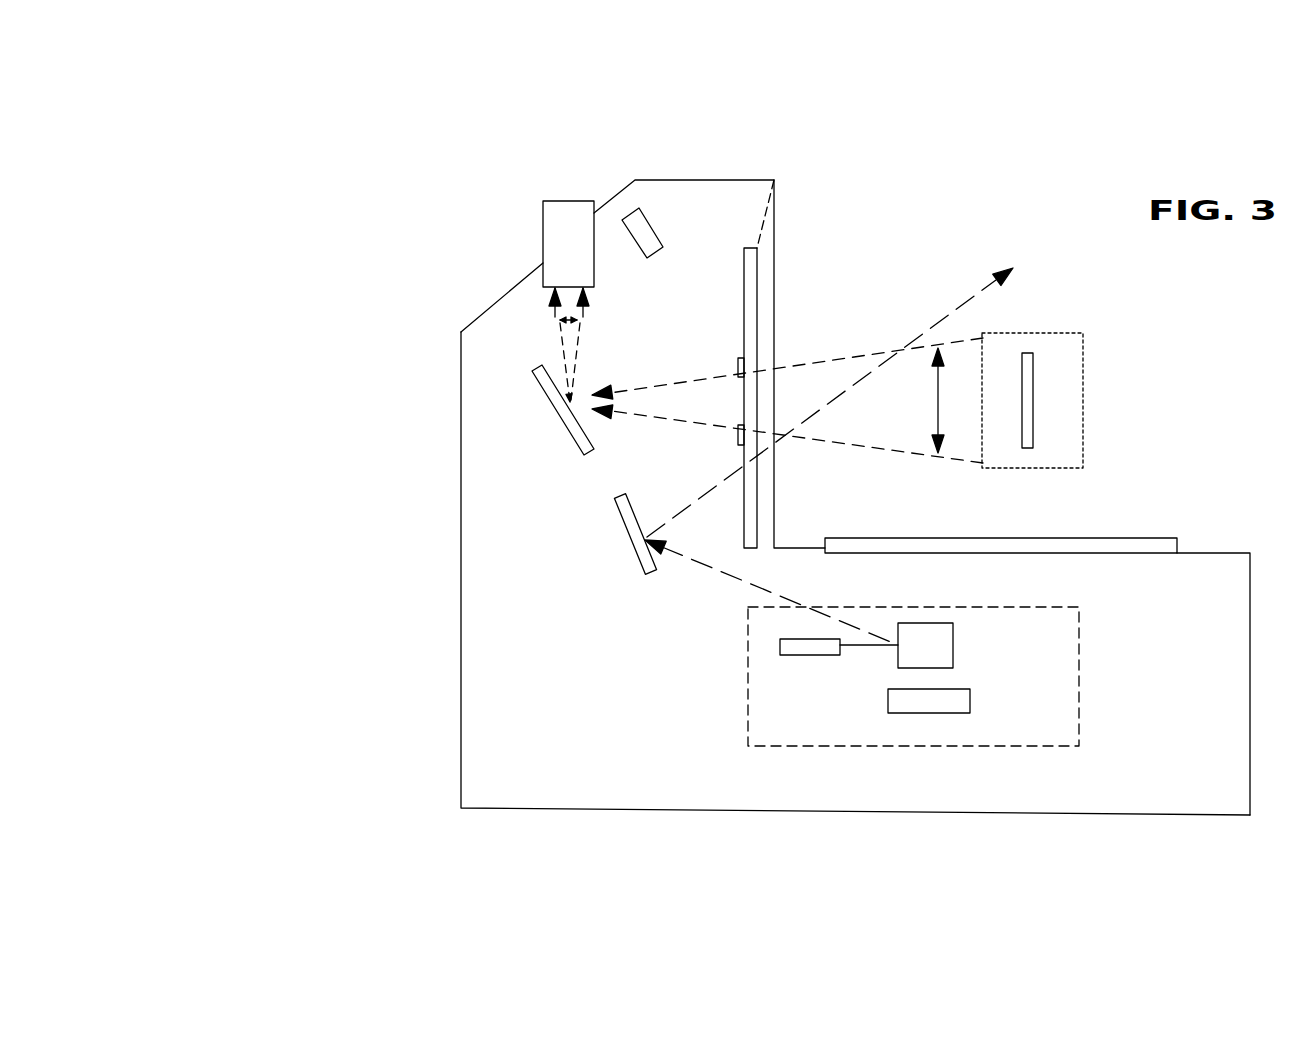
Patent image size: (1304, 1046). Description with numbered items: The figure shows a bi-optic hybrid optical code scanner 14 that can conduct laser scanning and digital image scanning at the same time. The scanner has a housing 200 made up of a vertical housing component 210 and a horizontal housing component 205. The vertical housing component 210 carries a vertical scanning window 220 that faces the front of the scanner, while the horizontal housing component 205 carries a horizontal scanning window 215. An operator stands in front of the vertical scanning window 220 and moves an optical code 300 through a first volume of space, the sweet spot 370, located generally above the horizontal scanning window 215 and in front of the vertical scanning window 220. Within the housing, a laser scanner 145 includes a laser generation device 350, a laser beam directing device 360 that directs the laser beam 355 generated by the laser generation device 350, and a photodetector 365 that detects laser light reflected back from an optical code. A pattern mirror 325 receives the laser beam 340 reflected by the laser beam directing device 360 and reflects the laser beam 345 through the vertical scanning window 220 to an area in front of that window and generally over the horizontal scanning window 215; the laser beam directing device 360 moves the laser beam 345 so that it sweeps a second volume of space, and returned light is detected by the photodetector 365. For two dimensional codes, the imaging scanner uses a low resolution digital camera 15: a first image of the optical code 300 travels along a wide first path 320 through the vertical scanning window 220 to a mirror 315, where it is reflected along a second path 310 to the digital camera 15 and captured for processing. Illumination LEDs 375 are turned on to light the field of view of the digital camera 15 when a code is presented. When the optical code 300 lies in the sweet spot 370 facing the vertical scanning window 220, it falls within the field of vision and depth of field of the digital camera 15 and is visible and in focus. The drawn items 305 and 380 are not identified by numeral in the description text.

The hybrid optical code scanner 14 is at (383, 100).
The digital camera 15 is at (543, 245).
The laser scanner 145 is at (1078, 663).
The housing 200 is at (562, 768).
The horizontal housing component 205 is at (1229, 552).
The vertical housing component 210 is at (744, 180).
The horizontal scanning window 215 is at (1150, 543).
The vertical scanning window 220 is at (742, 267).
The optical code 300 is at (1033, 425).
The sensor 305 is at (632, 210).
The second path 310 is at (560, 333).
The mirror 315 is at (540, 385).
The first path 320 is at (938, 400).
The pattern mirror 325 is at (627, 530).
The laser beam 340 is at (740, 582).
The laser beam 345 is at (970, 300).
The laser generation device 350 is at (795, 657).
The laser beam 355 is at (882, 645).
The laser beam directing device 360 is at (955, 650).
The photodetector 365 is at (970, 703).
The sweet spot 370 is at (1083, 358).
The illumination LEDs 375 is at (737, 370).
The aperture 380 is at (757, 402).